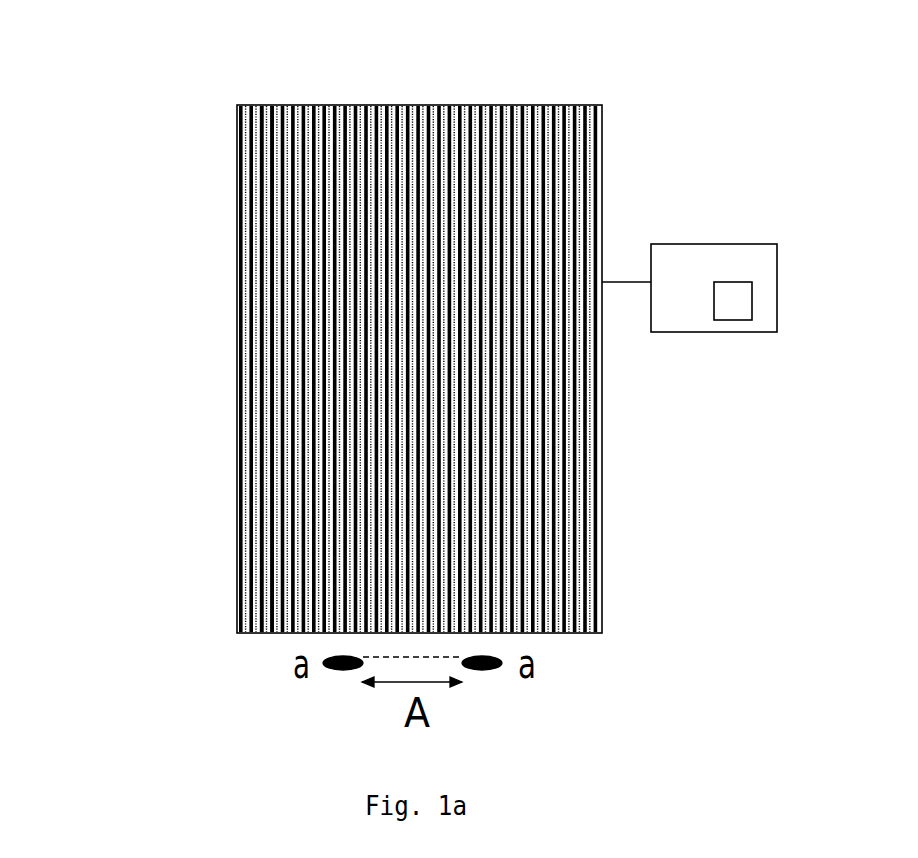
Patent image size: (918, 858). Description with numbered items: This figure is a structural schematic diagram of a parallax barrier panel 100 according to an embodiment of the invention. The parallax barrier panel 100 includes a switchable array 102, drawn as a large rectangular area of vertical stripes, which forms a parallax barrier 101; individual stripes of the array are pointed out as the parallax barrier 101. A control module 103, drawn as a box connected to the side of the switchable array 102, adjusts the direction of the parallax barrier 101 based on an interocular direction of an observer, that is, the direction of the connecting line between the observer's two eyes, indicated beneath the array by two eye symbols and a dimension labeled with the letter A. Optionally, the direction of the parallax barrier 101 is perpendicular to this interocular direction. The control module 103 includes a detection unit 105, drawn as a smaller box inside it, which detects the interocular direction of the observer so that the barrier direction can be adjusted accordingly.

The parallax barrier panel 100 is at (109, 55).
The parallax barrier 101 is at (267, 468).
The switchable array 102 is at (602, 95).
The control module 103 is at (742, 255).
The detection unit 105 is at (735, 307).